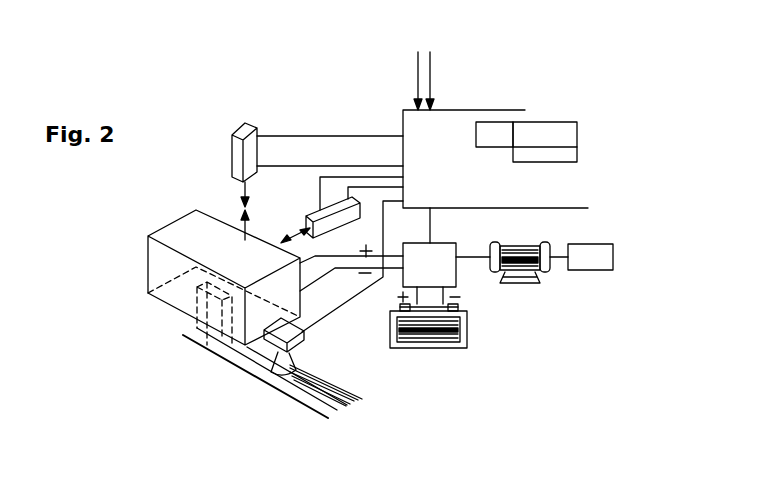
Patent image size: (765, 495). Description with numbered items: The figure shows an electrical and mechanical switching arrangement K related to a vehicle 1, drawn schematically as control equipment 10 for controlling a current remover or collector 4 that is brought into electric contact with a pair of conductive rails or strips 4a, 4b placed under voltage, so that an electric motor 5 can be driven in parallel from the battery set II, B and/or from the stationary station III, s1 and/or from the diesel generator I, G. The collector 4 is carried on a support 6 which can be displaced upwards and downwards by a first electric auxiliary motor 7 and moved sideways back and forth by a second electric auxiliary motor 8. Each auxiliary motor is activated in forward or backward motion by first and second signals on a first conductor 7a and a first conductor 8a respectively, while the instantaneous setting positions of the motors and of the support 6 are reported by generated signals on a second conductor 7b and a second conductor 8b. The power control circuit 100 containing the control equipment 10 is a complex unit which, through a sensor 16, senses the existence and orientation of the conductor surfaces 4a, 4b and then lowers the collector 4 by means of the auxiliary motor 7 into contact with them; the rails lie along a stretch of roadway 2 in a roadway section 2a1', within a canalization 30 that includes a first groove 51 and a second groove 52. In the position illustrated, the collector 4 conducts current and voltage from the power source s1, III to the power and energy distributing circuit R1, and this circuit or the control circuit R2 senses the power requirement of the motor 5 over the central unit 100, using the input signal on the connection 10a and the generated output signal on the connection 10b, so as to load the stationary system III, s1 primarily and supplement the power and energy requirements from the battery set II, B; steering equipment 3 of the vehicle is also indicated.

The vehicle 1 is at (285, 151).
The first electric auxiliary motor 7 is at (231, 148).
The first conductor 7a is at (340, 165).
The second conductor 7b is at (378, 135).
The power control circuit 100 is at (478, 110).
The connection or conductor 10a is at (404, 81).
The connection or conductor 10b is at (430, 236).
The control equipment 10 is at (570, 155).
The steering equipment 3 is at (503, 137).
The second electric auxiliary motor 8 is at (313, 228).
The first conductor 8a is at (320, 193).
The second conductor 8b is at (384, 198).
The support 6 is at (213, 247).
The electric motor 5 is at (514, 246).
The sensor 16 is at (304, 333).
The stretch of a roadway 2 is at (183, 338).
The current remover or collector 4 is at (197, 326).
The first rail 4a is at (252, 366).
The second rail 4b is at (327, 388).
The canalization 30 is at (288, 388).
The roadway section 2a1' is at (352, 401).
The first groove 51 is at (327, 416).
The second groove 52 is at (320, 393).
The power and energy distributing circuit R1 is at (458, 278).
The control circuit R2 is at (557, 122).
The battery set B is at (467, 330).
The diesel generator G is at (416, 49).
The electrical/mechanical switching arrangement K is at (167, 203).
The stationary station s1 is at (310, 375).
The first power source I is at (432, 68).
The second power source II is at (429, 364).
The third power source III is at (199, 380).